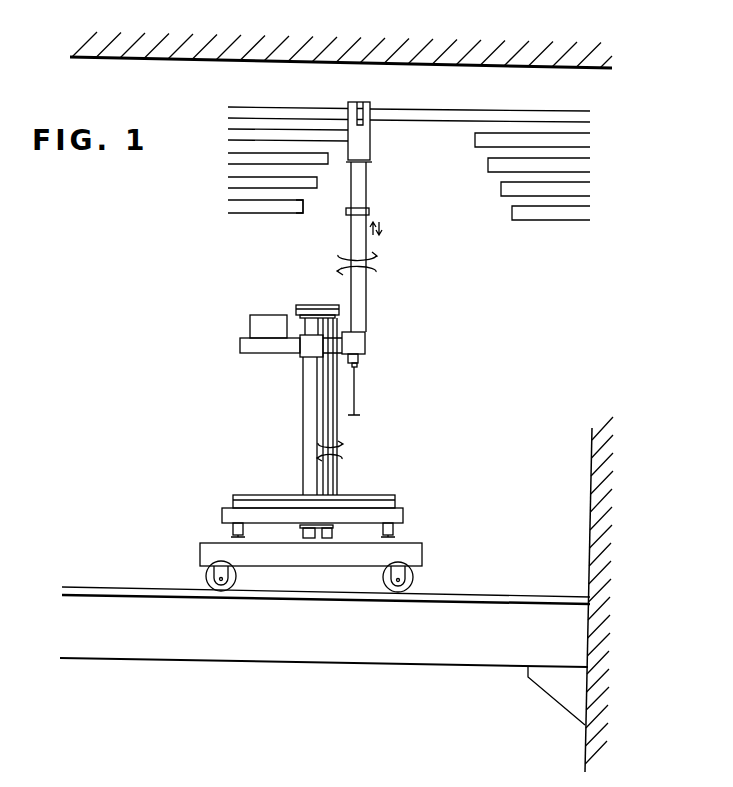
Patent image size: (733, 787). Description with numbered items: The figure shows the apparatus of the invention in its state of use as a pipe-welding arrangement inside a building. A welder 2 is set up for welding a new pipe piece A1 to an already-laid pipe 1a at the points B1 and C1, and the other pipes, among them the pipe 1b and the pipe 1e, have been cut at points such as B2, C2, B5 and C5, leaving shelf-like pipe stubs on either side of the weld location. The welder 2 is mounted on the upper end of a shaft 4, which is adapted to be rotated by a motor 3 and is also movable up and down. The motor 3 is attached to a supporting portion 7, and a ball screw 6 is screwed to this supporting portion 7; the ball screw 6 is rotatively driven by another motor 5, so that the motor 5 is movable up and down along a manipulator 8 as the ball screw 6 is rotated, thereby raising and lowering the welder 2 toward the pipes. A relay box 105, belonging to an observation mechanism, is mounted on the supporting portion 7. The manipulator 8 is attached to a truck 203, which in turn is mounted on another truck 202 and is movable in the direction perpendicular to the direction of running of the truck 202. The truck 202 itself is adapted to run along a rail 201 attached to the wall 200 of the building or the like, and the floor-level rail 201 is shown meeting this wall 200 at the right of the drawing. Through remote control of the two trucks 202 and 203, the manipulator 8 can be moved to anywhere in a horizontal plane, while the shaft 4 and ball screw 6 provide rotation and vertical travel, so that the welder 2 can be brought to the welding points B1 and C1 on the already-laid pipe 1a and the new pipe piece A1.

The already-laid pipe 1a is at (297, 106).
The pipe 1b is at (258, 135).
The pipe 1e is at (256, 210).
The new pipe piece A1 is at (445, 118).
The welding point B1 is at (362, 102).
The cut point B2 is at (347, 154).
The cut point B5 is at (305, 206).
The welding point C1 is at (497, 120).
The cut point C2 is at (475, 138).
The cut point C5 is at (512, 214).
The welder 2 is at (370, 143).
The motor 3 is at (358, 359).
The shaft 4 is at (366, 306).
The motor 5 is at (370, 533).
The ball screw 6 is at (333, 476).
The supporting portion 7 is at (365, 345).
The manipulator 8 is at (303, 432).
The relay box 105 is at (250, 327).
The wall 200 is at (592, 529).
The rail 201 is at (487, 597).
The truck 202 is at (422, 561).
The truck 203 is at (403, 518).